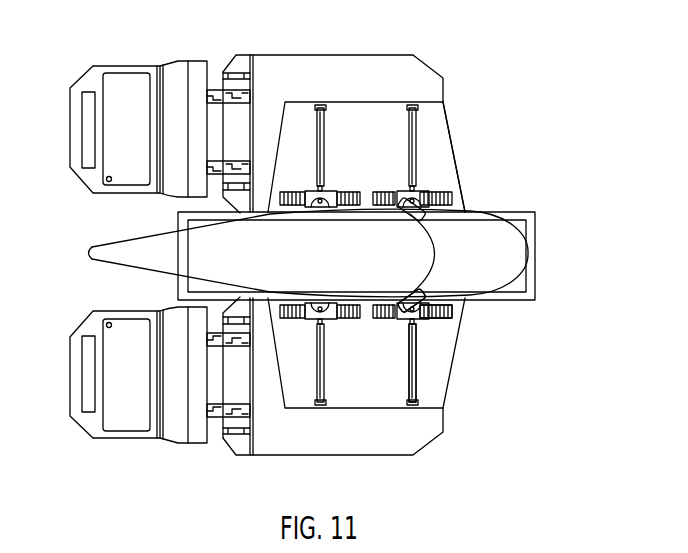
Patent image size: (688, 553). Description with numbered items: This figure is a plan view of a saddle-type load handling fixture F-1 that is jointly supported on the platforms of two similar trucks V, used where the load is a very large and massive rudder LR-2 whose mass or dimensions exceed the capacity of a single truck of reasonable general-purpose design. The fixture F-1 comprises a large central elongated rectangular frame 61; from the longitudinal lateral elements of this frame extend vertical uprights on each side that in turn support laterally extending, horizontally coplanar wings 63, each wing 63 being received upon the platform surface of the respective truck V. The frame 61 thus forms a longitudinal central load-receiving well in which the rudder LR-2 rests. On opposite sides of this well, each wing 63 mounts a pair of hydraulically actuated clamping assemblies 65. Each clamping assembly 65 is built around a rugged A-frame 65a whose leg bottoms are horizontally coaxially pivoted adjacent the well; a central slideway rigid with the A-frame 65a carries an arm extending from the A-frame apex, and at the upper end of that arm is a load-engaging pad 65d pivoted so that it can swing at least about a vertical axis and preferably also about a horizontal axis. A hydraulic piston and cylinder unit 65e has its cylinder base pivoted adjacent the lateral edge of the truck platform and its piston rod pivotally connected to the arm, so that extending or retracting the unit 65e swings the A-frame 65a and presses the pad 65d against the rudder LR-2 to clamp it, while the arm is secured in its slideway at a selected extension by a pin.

The vehicle V is at (189, 58).
The rudder LR-2 is at (149, 237).
The central elongated rectangular frame 61 is at (537, 224).
The wings 63 is at (438, 127).
The hydraulically actuated clamping assemblies 65 is at (393, 141).
The A-frame 65a is at (441, 315).
The load-engaging pad 65d is at (418, 302).
The hydraulic piston and cylinder unit 65e is at (400, 393).
The load fixture F-1 is at (465, 186).